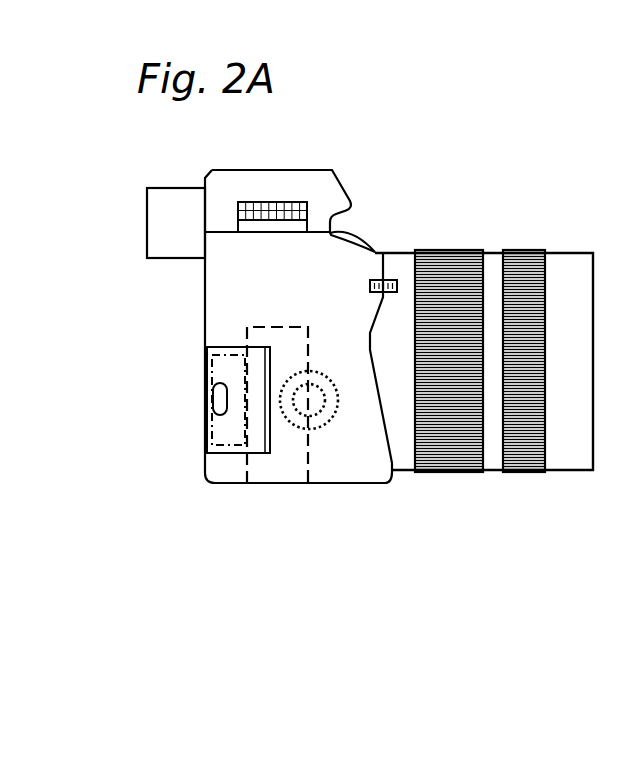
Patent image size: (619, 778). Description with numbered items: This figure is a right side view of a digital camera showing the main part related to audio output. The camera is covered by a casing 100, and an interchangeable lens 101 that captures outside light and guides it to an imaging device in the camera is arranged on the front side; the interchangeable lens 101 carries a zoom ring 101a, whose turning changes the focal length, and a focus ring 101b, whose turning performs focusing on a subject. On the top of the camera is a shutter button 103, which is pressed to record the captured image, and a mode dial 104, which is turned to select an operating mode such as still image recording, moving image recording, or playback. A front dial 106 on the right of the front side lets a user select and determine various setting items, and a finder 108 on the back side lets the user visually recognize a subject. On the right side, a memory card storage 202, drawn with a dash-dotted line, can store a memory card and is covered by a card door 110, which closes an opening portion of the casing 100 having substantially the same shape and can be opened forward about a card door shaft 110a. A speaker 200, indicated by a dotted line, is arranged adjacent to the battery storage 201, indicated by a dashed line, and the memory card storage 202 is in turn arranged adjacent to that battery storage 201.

The casing 100 is at (250, 486).
The interchangeable lens 101 is at (567, 253).
The zoom ring 101a is at (528, 250).
The focus ring 101b is at (453, 250).
The shutter button 103 is at (357, 233).
The mode dial 104 is at (238, 203).
The front dial 106 is at (367, 285).
The finder 108 is at (146, 213).
The card door 110 is at (205, 420).
The card door shaft 110a is at (273, 441).
The speaker 200 is at (333, 413).
The battery storage 201 is at (248, 460).
The memory card storage 202 is at (205, 370).